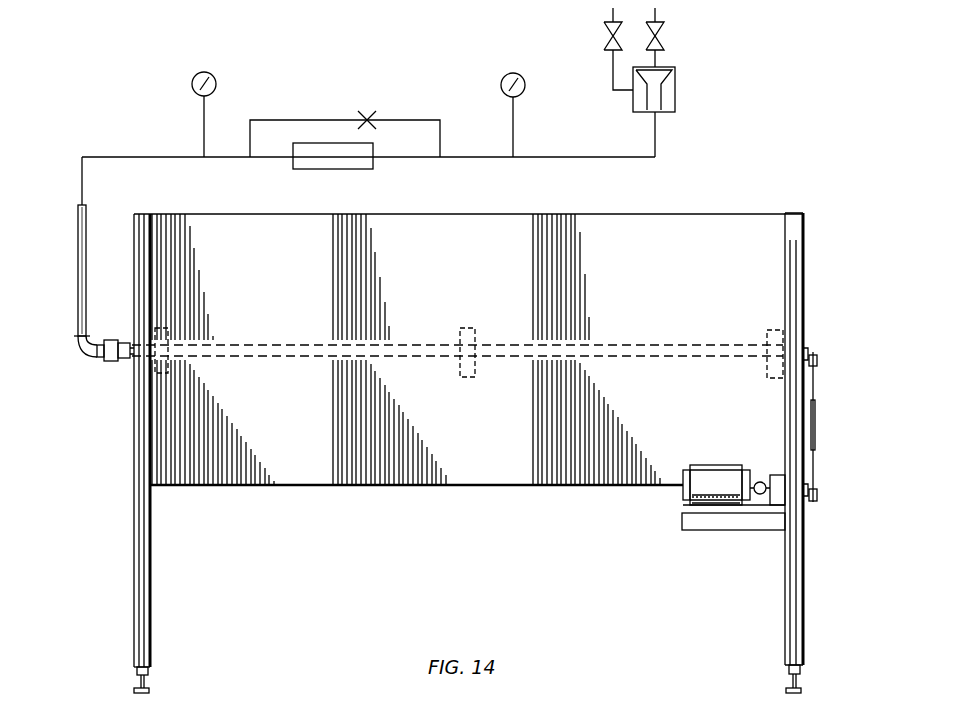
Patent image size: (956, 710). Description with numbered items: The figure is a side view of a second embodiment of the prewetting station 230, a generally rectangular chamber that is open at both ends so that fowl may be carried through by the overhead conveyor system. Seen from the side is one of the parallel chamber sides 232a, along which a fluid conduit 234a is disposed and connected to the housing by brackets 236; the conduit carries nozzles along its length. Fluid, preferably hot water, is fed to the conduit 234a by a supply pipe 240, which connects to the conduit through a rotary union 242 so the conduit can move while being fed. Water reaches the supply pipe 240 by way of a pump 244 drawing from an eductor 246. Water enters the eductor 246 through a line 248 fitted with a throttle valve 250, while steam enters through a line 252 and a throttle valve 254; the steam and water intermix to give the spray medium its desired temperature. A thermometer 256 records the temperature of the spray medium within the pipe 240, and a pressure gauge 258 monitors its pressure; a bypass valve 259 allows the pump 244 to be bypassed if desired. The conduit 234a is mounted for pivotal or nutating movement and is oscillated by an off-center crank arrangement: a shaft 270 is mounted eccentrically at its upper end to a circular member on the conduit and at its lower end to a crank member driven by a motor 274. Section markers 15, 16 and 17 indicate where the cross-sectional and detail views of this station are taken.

The prewetting station 230 is at (768, 200).
The side 232a is at (492, 454).
The fluid conduit 234a is at (606, 360).
The brackets 236 is at (190, 366).
The supply pipe 240 is at (78, 294).
The rotary union 242 is at (113, 363).
The pump 244 is at (303, 170).
The eductor 246 is at (676, 75).
The line 248 is at (612, 80).
The throttle valve 250 is at (604, 38).
The line 252 is at (660, 24).
The throttle valve 254 is at (662, 42).
The thermometer 256 is at (513, 73).
The pressure gauge 258 is at (246, 77).
The bypass valve 259 is at (362, 112).
The shaft 270 is at (816, 438).
The motor 274 is at (740, 465).
The section line 15 is at (825, 305).
The section line 16 is at (125, 305).
The section line 17 is at (450, 165).